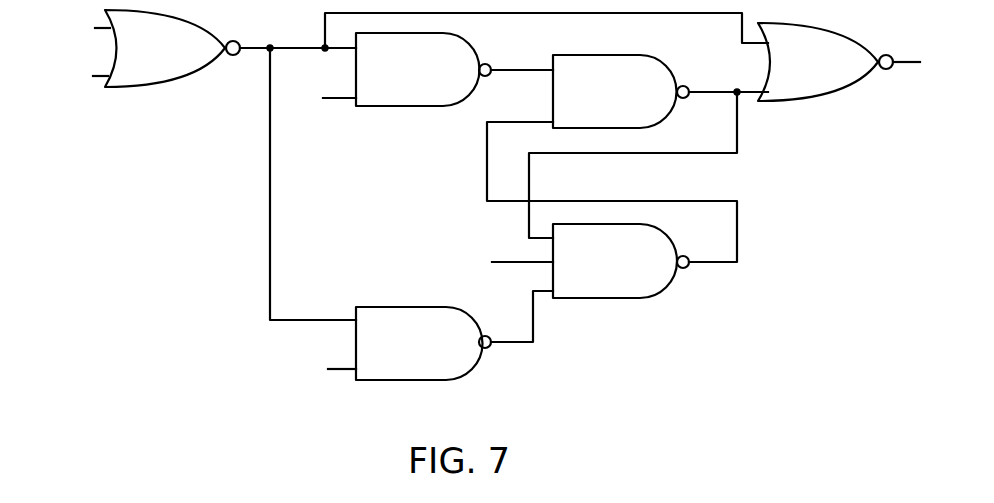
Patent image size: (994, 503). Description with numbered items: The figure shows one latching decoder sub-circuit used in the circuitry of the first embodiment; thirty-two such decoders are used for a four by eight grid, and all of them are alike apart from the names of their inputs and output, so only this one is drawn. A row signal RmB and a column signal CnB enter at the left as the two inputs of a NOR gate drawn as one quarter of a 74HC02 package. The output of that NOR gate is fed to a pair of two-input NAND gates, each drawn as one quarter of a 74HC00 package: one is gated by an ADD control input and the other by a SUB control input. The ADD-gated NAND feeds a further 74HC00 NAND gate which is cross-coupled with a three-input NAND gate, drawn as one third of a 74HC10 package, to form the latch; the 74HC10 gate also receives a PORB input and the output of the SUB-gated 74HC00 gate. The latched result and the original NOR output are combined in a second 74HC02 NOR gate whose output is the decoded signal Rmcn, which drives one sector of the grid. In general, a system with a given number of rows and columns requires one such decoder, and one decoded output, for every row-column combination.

The quad 2-input NOR gate (1/4 74HC02) 74HC02 is at (499, 55).
The quad 2-input NAND gate (1/4 74HC00) 74HC00 is at (522, 206).
The triple 3-input NAND gate (1/3 74HC10) 74HC10 is at (621, 261).
The RB signal RmB is at (81, 28).
The CB signal CnB is at (81, 76).
The ADD control input ADD is at (317, 98).
The SUB control input SUB is at (320, 369).
The PORB power-on reset input PORB is at (494, 262).
The RmCn signal Rmcn is at (888, 100).